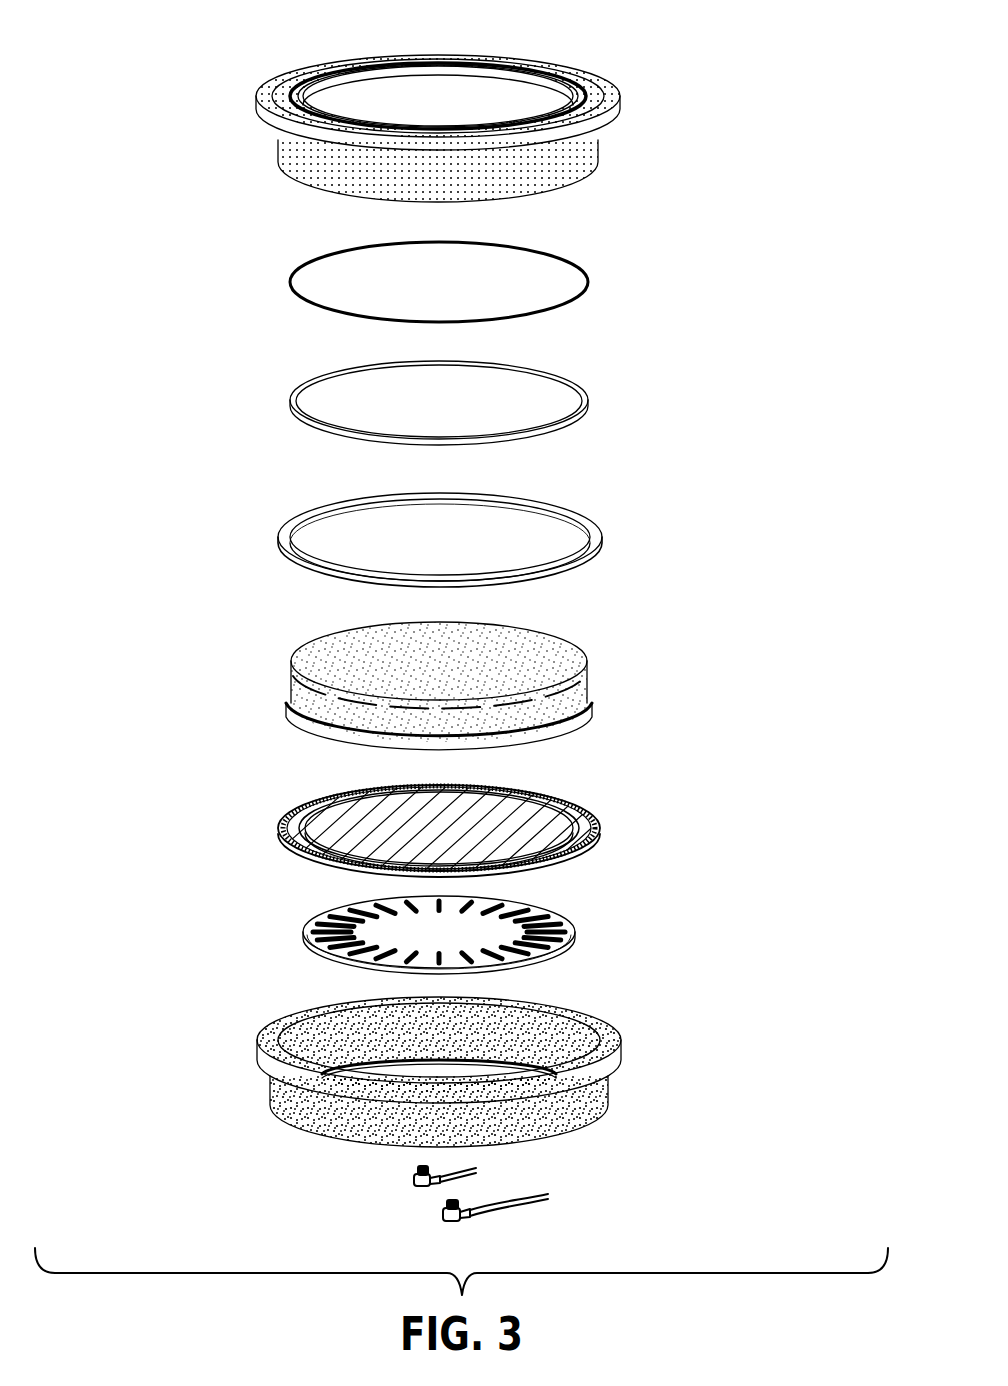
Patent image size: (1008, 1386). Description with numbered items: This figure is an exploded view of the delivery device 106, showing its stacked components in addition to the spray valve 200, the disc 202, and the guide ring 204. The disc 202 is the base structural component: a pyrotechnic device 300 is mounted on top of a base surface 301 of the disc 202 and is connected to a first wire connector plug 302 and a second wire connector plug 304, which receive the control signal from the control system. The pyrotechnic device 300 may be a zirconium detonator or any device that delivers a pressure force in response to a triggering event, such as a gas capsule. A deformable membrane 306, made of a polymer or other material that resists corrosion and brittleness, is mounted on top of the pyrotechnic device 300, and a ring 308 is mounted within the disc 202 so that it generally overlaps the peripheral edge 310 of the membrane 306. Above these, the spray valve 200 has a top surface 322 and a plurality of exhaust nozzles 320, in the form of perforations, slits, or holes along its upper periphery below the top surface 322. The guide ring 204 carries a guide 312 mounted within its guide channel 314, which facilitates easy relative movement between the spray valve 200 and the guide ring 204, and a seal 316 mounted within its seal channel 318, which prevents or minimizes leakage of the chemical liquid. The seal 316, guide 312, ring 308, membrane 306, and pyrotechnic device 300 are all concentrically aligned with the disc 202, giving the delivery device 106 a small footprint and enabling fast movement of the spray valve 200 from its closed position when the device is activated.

The delivery device 106 is at (142, 284).
The guide ring 204 is at (481, 105).
The seal channel 318 is at (423, 64).
The guide channel 314 is at (500, 95).
The seal 316 is at (593, 278).
The guide 312 is at (596, 403).
The ring 308 is at (606, 536).
The spray valve 200 is at (451, 695).
The top surface 322 is at (327, 656).
The exhaust nozzles 320 is at (323, 693).
The deformable membrane 306 is at (445, 826).
The peripheral edge 310 is at (277, 826).
The pyrotechnic device 300 is at (584, 938).
The disc 202 is at (464, 1075).
The base surface 301 is at (352, 1062).
The first wire connector plug 302 is at (452, 1187).
The second wire connector plug 304 is at (483, 1218).